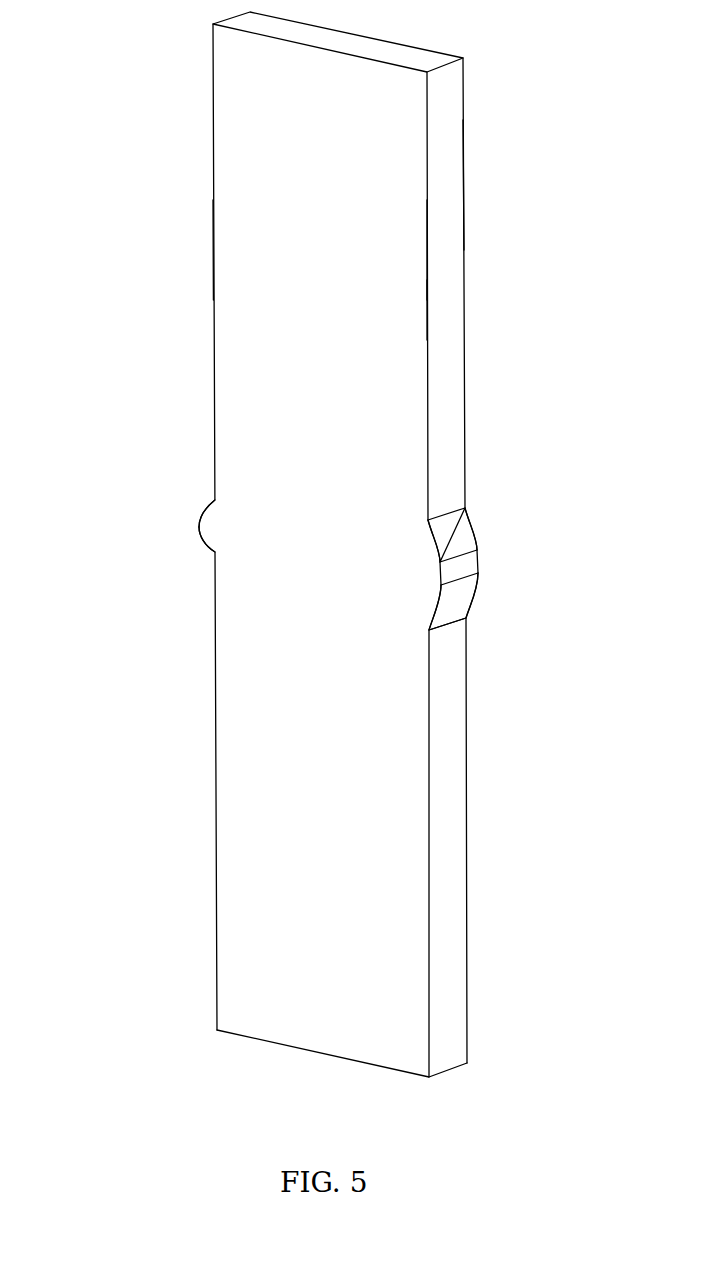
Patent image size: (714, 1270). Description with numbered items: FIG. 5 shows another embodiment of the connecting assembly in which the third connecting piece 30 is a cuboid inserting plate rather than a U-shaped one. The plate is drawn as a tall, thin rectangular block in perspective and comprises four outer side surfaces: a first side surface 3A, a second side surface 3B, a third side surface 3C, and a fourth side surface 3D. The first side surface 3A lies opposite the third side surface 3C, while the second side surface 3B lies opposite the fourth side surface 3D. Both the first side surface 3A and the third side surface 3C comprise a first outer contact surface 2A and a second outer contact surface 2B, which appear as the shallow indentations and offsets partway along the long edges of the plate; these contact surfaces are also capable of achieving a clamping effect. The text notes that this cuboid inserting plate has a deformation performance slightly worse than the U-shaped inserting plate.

The third connecting piece 30 is at (378, 388).
The first side surface 3A is at (450, 250).
The second side surface 3B is at (464, 185).
The third side surface 3C is at (213, 248).
The fourth side surface 3D is at (362, 305).
The first outer contact surface 2A is at (207, 548).
The second outer contact surface 2B is at (208, 502).